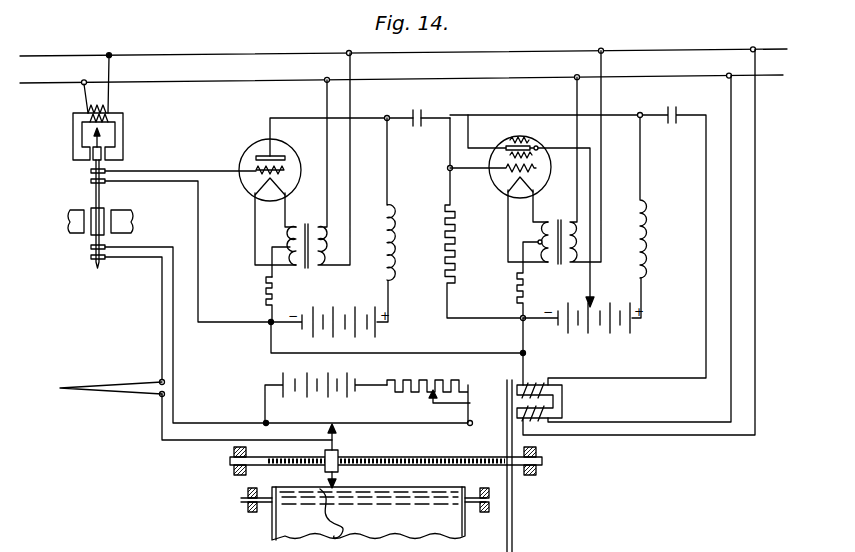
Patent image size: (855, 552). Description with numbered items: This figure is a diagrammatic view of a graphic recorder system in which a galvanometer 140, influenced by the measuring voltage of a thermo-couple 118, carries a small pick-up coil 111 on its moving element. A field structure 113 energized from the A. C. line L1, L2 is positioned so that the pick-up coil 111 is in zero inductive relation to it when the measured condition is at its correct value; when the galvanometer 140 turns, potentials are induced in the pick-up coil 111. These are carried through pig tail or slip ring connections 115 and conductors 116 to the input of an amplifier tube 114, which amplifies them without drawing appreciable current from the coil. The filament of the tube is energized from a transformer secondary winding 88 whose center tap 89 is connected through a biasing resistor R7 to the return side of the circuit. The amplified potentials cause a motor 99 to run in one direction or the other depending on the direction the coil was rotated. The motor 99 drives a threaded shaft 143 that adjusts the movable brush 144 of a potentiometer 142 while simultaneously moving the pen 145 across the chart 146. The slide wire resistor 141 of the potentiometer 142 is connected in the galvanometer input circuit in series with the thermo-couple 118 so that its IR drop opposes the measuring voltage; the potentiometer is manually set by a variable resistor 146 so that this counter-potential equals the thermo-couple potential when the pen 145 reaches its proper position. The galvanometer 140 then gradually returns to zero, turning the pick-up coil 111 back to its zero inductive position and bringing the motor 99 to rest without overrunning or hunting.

The A. C. line L1 is at (530, 51).
The A. C. line L2 is at (536, 81).
The field structure 113 is at (73, 133).
The pick-up coil 111 is at (91, 164).
The pig tail or slip ring connections 115 is at (93, 181).
The galvanometer 140 is at (90, 236).
The conductors 116 is at (172, 172).
The thermo-couple 118 is at (87, 396).
The amplifier tube 114 is at (246, 144).
The transformer secondary winding 88 is at (296, 225).
The center tap 89 is at (288, 247).
The biasing resistor R7 is at (276, 287).
The motor 99 is at (512, 487).
The slide wire resistor 141 is at (295, 420).
The potentiometer 142 is at (402, 417).
The chart 146 is at (404, 384).
The threaded shaft 143 is at (414, 455).
The movable brush 144 is at (335, 431).
The pen 145 is at (342, 478).